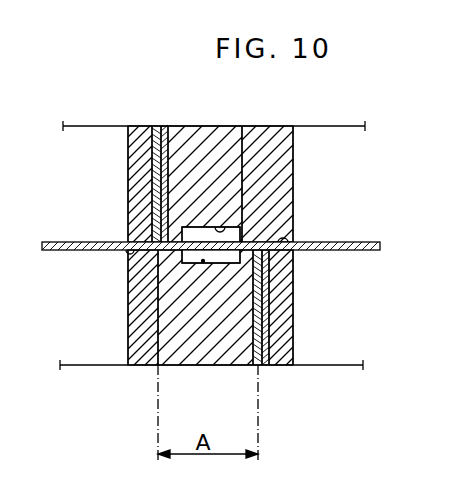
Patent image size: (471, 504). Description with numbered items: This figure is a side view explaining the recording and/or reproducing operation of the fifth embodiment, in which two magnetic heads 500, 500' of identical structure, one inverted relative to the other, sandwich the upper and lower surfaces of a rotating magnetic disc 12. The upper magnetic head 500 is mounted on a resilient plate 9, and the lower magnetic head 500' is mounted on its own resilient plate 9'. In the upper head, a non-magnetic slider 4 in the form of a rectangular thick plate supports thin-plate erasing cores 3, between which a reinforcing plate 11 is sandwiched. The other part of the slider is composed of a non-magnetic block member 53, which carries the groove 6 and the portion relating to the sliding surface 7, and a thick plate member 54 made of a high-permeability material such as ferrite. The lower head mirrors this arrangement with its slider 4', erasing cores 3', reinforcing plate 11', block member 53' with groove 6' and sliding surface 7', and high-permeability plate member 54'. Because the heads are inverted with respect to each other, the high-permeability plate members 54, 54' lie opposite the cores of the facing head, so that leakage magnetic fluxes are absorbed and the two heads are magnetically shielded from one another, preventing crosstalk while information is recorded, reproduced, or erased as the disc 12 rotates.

The erasing cores 3 is at (145, 163).
The slider 4 is at (121, 166).
The reinforcing plate 11 is at (177, 165).
The block member 53 is at (206, 165).
The plate member 54 is at (270, 166).
The resilient plate 9 is at (214, 108).
The magnetic head 500 is at (177, 184).
The magnetic disc 12 is at (104, 242).
The sliding surface 7 is at (112, 266).
The groove 6 is at (253, 216).
The sliding surface 7' is at (311, 226).
The groove 6' is at (166, 281).
The magnetic head 500' is at (244, 307).
The plate member 54' is at (130, 326).
The block member 53' is at (205, 330).
The reinforcing plate 11' is at (238, 330).
The erasing cores 3' is at (276, 331).
The slider 4' is at (297, 332).
The resilient plate 9' is at (211, 386).